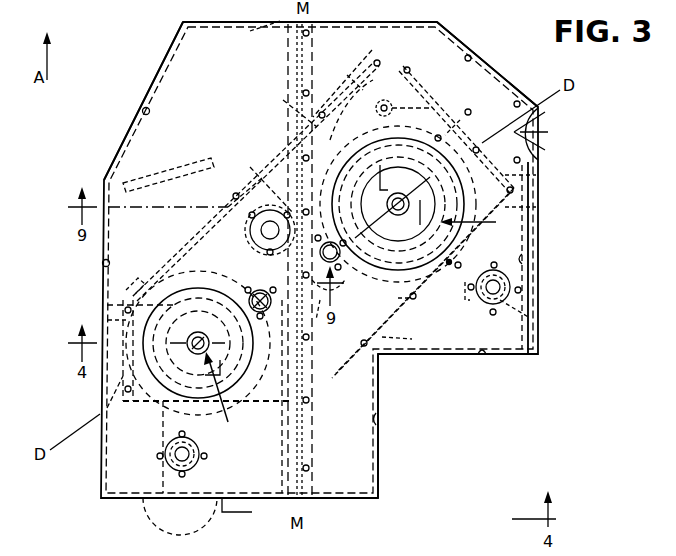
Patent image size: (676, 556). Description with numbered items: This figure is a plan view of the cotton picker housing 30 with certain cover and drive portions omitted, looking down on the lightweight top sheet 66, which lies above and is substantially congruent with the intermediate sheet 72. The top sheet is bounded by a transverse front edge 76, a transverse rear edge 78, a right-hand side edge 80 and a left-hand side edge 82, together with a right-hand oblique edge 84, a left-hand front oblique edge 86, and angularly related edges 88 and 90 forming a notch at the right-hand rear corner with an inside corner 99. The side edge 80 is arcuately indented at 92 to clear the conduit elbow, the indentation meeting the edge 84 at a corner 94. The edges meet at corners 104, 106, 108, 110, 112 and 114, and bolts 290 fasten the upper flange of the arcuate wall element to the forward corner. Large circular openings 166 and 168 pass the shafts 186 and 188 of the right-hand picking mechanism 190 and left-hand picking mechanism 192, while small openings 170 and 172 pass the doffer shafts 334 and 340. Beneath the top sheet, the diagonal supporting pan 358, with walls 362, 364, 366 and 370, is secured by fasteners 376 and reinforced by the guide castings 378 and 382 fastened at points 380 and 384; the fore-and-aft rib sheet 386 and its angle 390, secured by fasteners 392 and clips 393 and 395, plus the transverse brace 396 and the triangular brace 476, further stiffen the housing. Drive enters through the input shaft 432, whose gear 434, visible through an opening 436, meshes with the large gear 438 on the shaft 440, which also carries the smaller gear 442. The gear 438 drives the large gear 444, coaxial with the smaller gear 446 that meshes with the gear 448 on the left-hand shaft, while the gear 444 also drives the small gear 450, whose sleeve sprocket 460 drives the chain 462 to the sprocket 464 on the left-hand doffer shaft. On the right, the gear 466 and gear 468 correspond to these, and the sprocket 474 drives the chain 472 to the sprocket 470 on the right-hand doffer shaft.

The housing 30 is at (90, 140).
The top sheet 66 is at (187, 58).
The intermediate sheet 72 is at (557, 130).
The front edge 76 is at (402, 22).
The rear edge 78 is at (347, 505).
The right-hand side edge 80 is at (536, 243).
The left-hand side edge 82 is at (104, 277).
The right-hand oblique edge 84 is at (493, 70).
The left-hand front oblique edge 86 is at (151, 85).
The notch edge 88 is at (453, 355).
The fore-and-aft secondary edge 90 is at (380, 443).
The arcuate indentation 92 is at (540, 114).
The corner 94 is at (531, 100).
The inside corner 99 is at (384, 358).
The corner 104 is at (437, 22).
The corner 106 is at (183, 22).
The left-hand rear corner 108 is at (101, 498).
The corner 110 is at (529, 355).
The corner 112 is at (378, 498).
The corner 114 is at (104, 180).
The large circular opening 166 is at (408, 143).
The large circular opening 168 is at (207, 290).
The small circular opening 170 is at (505, 297).
The small circular opening 172 is at (170, 467).
The shaft 186 is at (404, 199).
The shaft 188 is at (204, 340).
The right-hand picking mechanism 190 is at (486, 223).
The left-hand picking mechanism 192 is at (227, 396).
The bolts 290 is at (540, 150).
The doffer shaft 334 is at (500, 287).
The doffer shaft 340 is at (186, 456).
The supporting pan 358 is at (284, 128).
The pan wall 362 is at (536, 207).
The front wall 364 is at (360, 76).
The pan wall 366 is at (120, 307).
The rear wall 370 is at (396, 322).
The fasteners 376 is at (412, 70).
The guide casting 378 is at (165, 240).
The securing points 380 is at (122, 291).
The guide casting 382 is at (401, 100).
The securing points 384 is at (545, 175).
The rib sheet 386 is at (283, 74).
The angle 390 is at (305, 417).
The fasteners 392 is at (302, 435).
The mounting clip 393 is at (278, 134).
The mounting clip 395 is at (305, 403).
The transverse upright brace 396 is at (230, 192).
The input shaft 432 is at (272, 222).
The gear 434 is at (255, 182).
The opening 436 is at (251, 230).
The large gear 438 is at (331, 320).
The upright shaft 440 is at (336, 250).
The smaller gear 442 is at (345, 295).
The large gear 444 is at (207, 412).
The smaller gear 446 is at (332, 349).
The large gear 448 is at (165, 258).
The small gear 450 is at (222, 396).
The sprocket 460 is at (108, 320).
The chain 462 is at (163, 425).
The sprocket 464 is at (166, 458).
The gear 466 is at (380, 140).
The gear 468 is at (467, 122).
The sprocket 470 is at (530, 318).
The chain 472 is at (479, 306).
The sprocket 474 is at (450, 262).
The triangular brace 476 is at (167, 170).